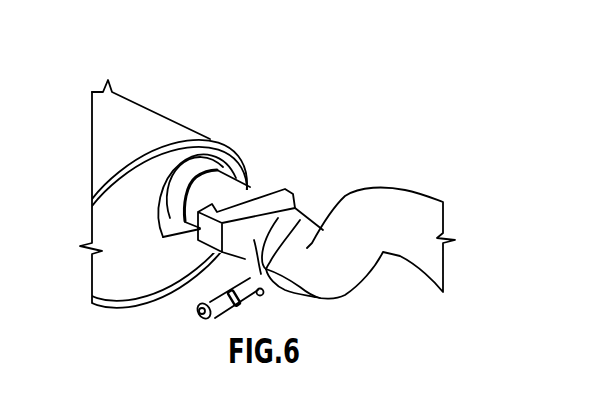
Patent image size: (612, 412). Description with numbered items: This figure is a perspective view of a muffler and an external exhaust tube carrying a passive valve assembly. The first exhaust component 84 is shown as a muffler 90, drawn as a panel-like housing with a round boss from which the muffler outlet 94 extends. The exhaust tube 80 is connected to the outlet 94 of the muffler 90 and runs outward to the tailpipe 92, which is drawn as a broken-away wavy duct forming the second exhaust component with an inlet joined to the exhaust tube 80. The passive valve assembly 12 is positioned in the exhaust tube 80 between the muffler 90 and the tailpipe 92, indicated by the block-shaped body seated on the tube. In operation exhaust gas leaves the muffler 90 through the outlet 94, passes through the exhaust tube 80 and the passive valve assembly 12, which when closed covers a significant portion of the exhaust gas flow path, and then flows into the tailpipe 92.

The first exhaust component 84 is at (184, 84).
The muffler 90 is at (157, 129).
The outlet 94 is at (212, 170).
The passive valve assembly 12 is at (310, 191).
The tailpipe 92 is at (423, 218).
The exhaust tube 80 is at (245, 265).